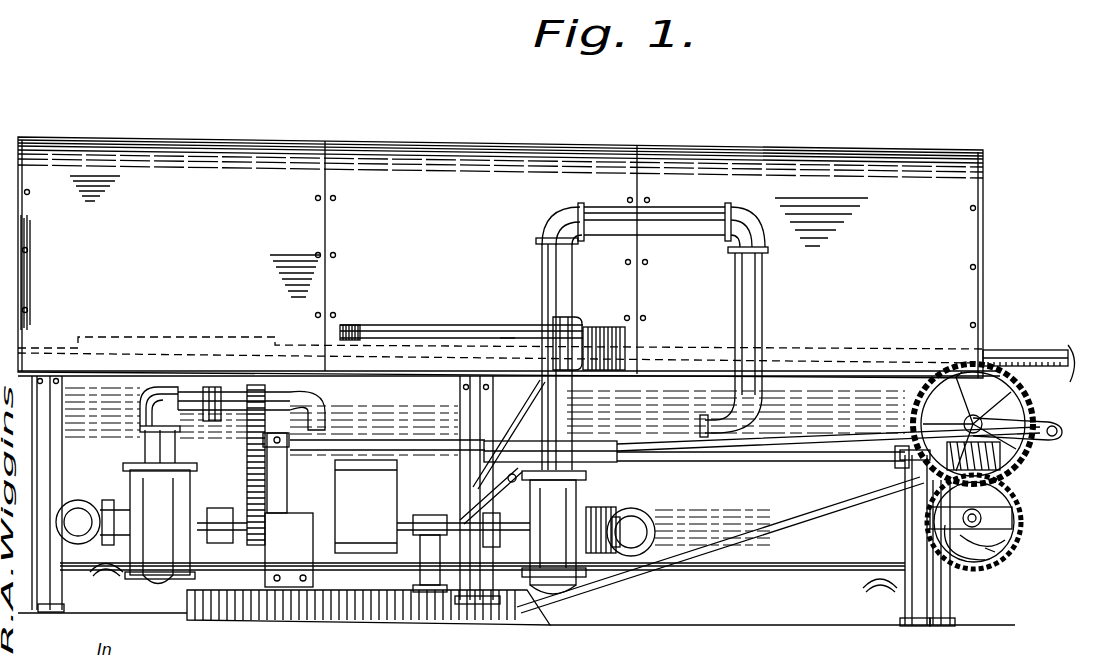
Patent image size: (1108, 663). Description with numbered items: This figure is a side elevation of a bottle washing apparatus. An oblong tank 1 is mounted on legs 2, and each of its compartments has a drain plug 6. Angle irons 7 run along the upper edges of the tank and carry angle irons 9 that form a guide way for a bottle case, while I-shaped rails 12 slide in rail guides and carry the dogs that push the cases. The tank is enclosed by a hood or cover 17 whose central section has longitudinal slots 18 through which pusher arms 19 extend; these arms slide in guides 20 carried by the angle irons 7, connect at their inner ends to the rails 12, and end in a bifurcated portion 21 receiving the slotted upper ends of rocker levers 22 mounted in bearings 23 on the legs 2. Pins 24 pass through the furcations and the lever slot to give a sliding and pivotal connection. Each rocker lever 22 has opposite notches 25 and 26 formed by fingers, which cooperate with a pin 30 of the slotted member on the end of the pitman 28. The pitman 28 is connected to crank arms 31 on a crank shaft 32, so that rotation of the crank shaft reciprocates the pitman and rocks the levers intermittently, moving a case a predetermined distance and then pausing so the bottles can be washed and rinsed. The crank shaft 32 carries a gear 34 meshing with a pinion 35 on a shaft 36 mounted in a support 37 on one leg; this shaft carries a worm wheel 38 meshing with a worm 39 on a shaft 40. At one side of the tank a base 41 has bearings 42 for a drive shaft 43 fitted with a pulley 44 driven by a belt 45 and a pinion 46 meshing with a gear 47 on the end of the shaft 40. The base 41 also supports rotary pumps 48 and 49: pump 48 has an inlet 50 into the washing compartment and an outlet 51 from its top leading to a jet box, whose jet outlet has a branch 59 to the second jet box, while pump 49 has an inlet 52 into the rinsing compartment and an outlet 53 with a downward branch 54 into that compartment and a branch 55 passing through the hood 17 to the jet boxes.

The tank 1 is at (808, 575).
The legs 2 is at (470, 597).
The drain plug 6 is at (112, 574).
The angle irons 7 is at (725, 395).
The angle irons 9 is at (1072, 348).
The I-shaped rails 12 is at (1012, 352).
The hood or cover 17 is at (268, 146).
The slots 18 is at (432, 332).
The pusher arms 19 is at (507, 342).
The guides 20 is at (372, 332).
The bifurcated portion 21 is at (572, 320).
The rocker levers 22 is at (486, 492).
The bearings 23 is at (508, 480).
The pins 24 is at (598, 340).
The notch 25 is at (475, 437).
The notch 26 is at (640, 512).
The pitman 28 is at (858, 440).
The pin 30 is at (605, 500).
The crank arms 31 is at (1000, 418).
The crank shaft 32 is at (955, 380).
The gear 34 is at (1040, 425).
The pinion 35 is at (1012, 500).
The shaft 36 is at (990, 550).
The support 37 is at (1010, 535).
The worm wheel 38 is at (1020, 518).
The worm 39 is at (1003, 458).
The shaft 40 is at (785, 460).
The base 41 is at (330, 618).
The bearings 42 is at (413, 580).
The drive shaft 43 is at (318, 500).
The pulley 44 is at (385, 512).
The belt 45 is at (375, 463).
The pinion 46 is at (250, 548).
The gear 47 is at (250, 470).
The rotary pump 48 is at (145, 580).
The rotary pump 49 is at (553, 590).
The inlet 50 is at (85, 500).
The outlet 51 is at (150, 428).
The inlet 52 is at (770, 500).
The outlet 53 is at (548, 252).
The branch 54 is at (748, 290).
The branch 55 is at (738, 210).
The branch 59 is at (210, 422).